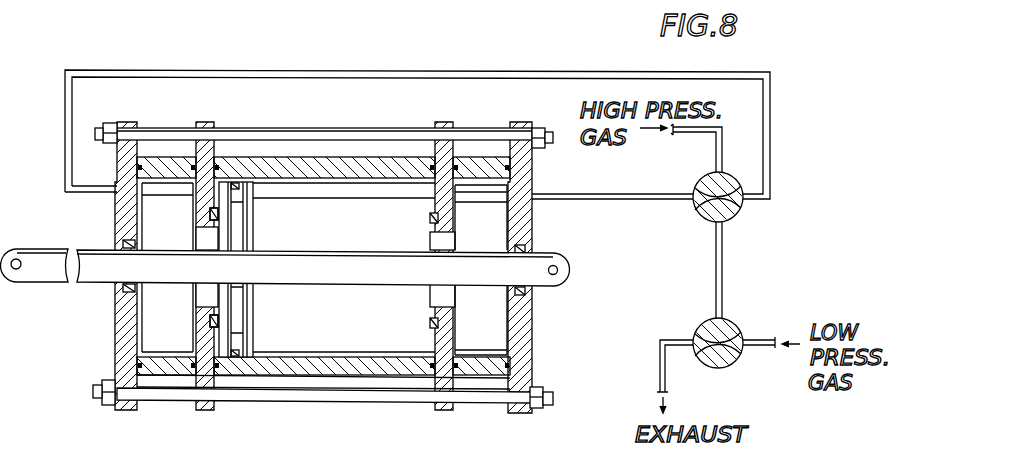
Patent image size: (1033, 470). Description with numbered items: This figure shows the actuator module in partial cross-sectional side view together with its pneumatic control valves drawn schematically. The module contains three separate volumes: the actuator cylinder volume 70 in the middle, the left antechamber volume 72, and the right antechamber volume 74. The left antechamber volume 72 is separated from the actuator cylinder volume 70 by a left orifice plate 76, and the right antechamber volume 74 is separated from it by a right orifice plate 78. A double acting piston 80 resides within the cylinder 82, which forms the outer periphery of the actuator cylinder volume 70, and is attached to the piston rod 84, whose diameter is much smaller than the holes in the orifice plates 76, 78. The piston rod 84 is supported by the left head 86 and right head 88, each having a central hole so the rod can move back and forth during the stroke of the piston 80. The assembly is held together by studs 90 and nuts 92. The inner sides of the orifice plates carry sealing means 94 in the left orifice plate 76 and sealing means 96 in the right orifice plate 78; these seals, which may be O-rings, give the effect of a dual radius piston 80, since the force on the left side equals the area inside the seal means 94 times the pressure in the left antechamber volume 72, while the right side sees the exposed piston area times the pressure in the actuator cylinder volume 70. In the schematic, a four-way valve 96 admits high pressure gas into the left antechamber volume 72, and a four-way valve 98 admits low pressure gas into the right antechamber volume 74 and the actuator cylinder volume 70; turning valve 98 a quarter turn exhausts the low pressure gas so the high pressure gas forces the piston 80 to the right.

The actuator cylinder volume 70 is at (323, 238).
The left antechamber volume 72 is at (180, 233).
The right antechamber volume 74 is at (490, 235).
The left orifice plate 76 is at (207, 150).
The right orifice plate 78 is at (445, 142).
The double acting piston 80 is at (248, 187).
The cylinder 82 is at (373, 167).
The piston rod 84 is at (551, 262).
The left head 86 is at (118, 326).
The right head 88 is at (530, 346).
The studs 90 is at (318, 133).
The nuts 92 is at (538, 408).
The sealing means 94 is at (216, 214).
The sealing means / four-way valve 96 is at (741, 213).
The four-way valve 98 is at (732, 322).